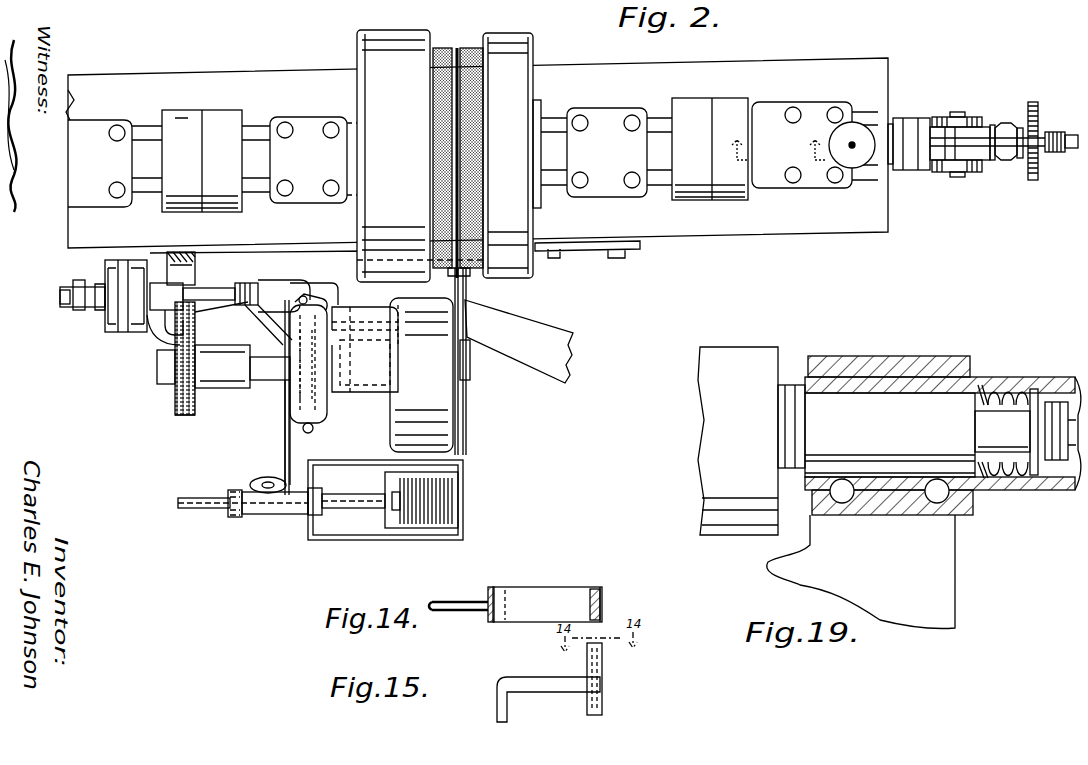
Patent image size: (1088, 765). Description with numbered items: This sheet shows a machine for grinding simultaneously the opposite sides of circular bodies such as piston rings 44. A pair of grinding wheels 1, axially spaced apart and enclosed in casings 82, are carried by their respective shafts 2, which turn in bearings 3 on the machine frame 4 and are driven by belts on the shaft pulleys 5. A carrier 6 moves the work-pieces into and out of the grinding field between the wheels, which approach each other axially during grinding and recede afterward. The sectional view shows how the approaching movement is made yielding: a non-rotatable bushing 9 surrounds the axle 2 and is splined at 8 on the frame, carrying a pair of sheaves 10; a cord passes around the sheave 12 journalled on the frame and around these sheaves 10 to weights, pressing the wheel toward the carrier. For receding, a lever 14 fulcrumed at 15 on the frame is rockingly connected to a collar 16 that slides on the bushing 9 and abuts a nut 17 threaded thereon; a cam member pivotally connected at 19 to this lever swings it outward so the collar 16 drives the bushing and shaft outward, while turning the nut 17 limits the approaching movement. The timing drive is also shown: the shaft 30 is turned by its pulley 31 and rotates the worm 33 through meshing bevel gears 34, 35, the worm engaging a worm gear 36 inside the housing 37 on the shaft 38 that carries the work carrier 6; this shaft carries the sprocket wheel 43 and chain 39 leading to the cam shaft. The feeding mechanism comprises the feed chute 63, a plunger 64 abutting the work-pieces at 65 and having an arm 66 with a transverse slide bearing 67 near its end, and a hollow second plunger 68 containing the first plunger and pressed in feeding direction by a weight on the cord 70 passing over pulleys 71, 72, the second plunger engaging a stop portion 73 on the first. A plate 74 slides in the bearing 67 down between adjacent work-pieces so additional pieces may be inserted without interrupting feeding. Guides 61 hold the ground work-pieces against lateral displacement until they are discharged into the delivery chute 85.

In FIG. 2, the grinding wheel 1 is at (484, 14).
In FIG. 19, the shaft 2 is at (927, 431).
In FIG. 2, the bearing 3 is at (473, 154).
In FIG. 2, the frame 4 is at (477, 160).
In FIG. 19, the frame 4 is at (861, 571).
In FIG. 2, the pulley 5 is at (455, 155).
In FIG. 19, the pulley 5 is at (738, 441).
In FIG. 2, the carrier 6 is at (462, 290).
In FIG. 19, the spline 8 is at (889, 493).
In FIG. 2, the bushing 9 is at (927, 172).
In FIG. 19, the bushing 9 is at (985, 377).
In FIG. 2, the sheave 10 is at (985, 108).
In FIG. 2, the sheave 12 is at (852, 144).
In FIG. 2, the lever 14 is at (1002, 125).
In FIG. 2, the fulcrum 15 is at (1019, 160).
In FIG. 2, the collar 16 is at (992, 125).
In FIG. 2, the nut 17 is at (1031, 102).
In FIG. 2, the pivot connection 19 is at (778, 158).
In FIG. 2, the shaft 30 is at (212, 292).
In FIG. 2, the pulley 31 is at (112, 333).
In FIG. 2, the worm 33 is at (318, 428).
In FIG. 2, the bevel gear 34 is at (300, 286).
In FIG. 2, the bevel gear 35 is at (338, 302).
In FIG. 2, the worm gear 36 is at (325, 398).
In FIG. 2, the housing 37 is at (290, 410).
In FIG. 2, the shaft 38 is at (268, 383).
In FIG. 2, the chain 39 is at (182, 416).
In FIG. 2, the sprocket wheel 43 is at (176, 396).
In FIG. 2, the piston ring 44 is at (420, 540).
In FIG. 2, the guide 61 is at (468, 298).
In FIG. 2, the feed chute 63 is at (397, 498).
In FIG. 2, the plunger 64 is at (212, 508).
In FIG. 14, the plunger 64 is at (474, 612).
In FIG. 2, the abutment 65 is at (393, 505).
In FIG. 2, the arm 66 is at (398, 470).
In FIG. 14, the arm 66 is at (500, 590).
In FIG. 15, the arm 66 is at (535, 682).
In FIG. 14, the slide bearing 67 is at (602, 588).
In FIG. 2, the hollow second plunger 68 is at (346, 509).
In FIG. 2, the cord 70 is at (292, 458).
In FIG. 2, the pulley 71 is at (266, 478).
In FIG. 2, the pulley 72 is at (285, 400).
In FIG. 2, the stop portion 73 is at (398, 490).
In FIG. 14, the stop portion 73 is at (490, 596).
In FIG. 14, the plate 74 is at (605, 600).
In FIG. 15, the plate 74 is at (604, 692).
In FIG. 2, the casing 82 is at (449, 156).
In FIG. 2, the delivery chute 85 is at (519, 341).